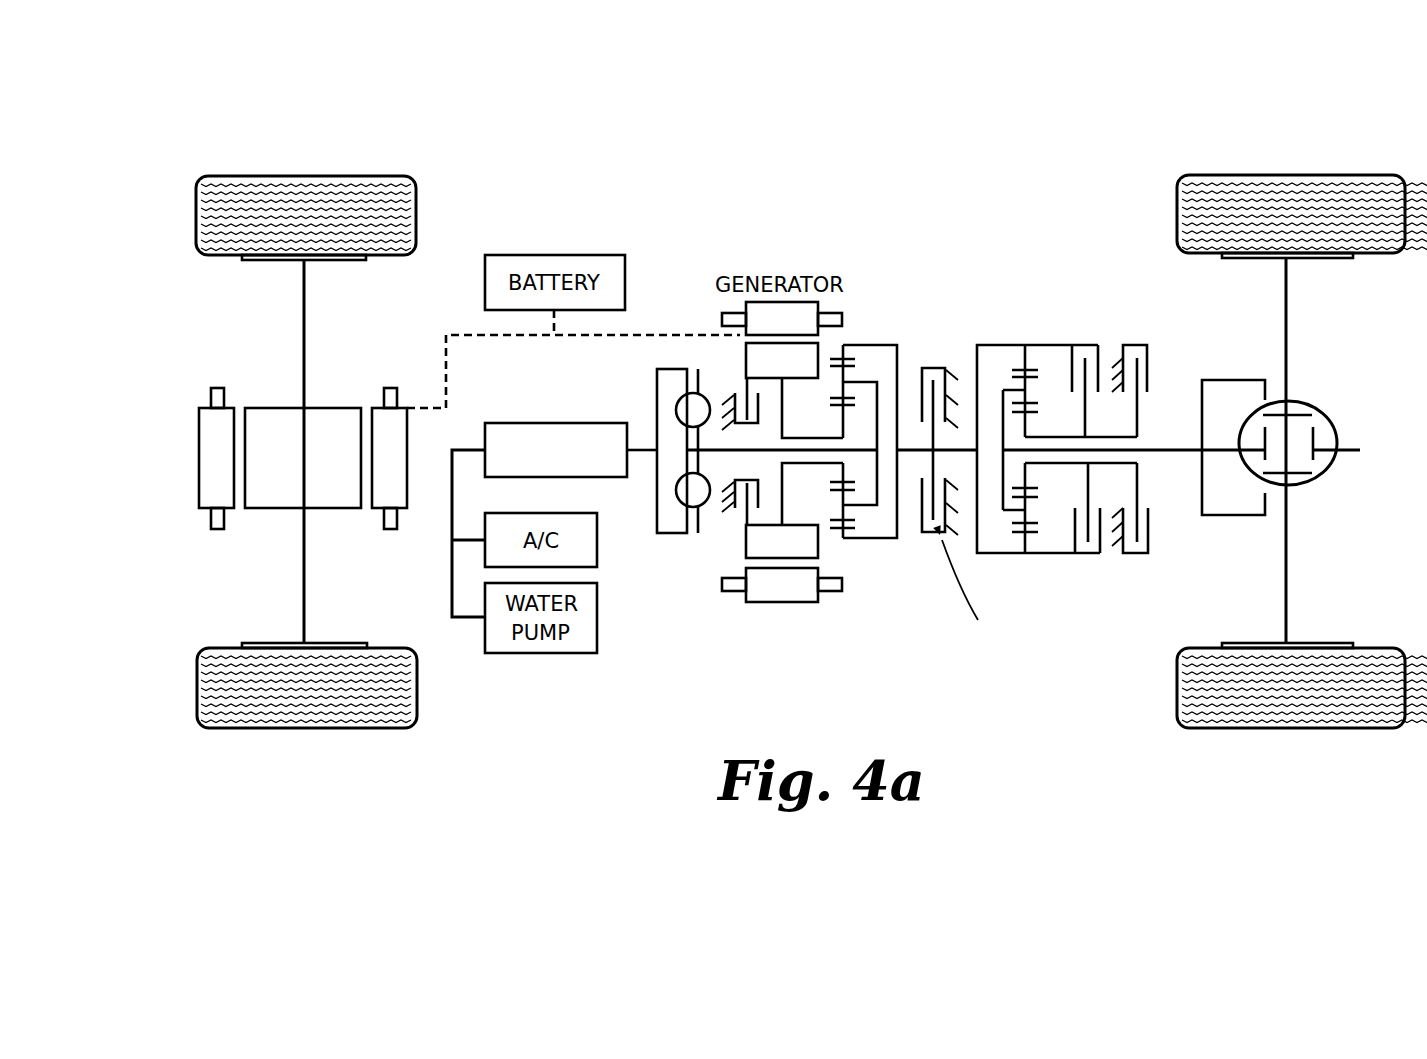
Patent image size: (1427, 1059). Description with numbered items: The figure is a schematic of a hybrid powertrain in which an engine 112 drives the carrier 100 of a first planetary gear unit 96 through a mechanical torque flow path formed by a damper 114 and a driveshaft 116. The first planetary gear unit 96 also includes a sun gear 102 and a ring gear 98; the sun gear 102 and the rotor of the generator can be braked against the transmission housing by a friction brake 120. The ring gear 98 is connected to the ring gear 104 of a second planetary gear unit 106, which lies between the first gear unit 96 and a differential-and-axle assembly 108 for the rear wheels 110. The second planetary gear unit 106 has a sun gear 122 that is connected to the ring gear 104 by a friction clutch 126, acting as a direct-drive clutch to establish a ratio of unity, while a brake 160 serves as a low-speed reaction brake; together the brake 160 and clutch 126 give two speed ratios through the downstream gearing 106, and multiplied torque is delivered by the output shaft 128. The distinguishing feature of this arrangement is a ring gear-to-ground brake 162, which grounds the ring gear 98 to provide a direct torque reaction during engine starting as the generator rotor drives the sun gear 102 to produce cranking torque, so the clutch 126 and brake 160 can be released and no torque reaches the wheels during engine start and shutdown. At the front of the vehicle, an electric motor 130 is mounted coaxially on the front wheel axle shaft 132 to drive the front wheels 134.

The rear wheels 110 is at (1330, 173).
The front wheels 134 is at (358, 728).
The front wheel axle shaft 132 is at (305, 350).
The electric motor 130 is at (338, 495).
The engine 112 is at (555, 423).
The damper 114 is at (690, 408).
The driveshaft 116 is at (720, 452).
The friction brake 120 is at (745, 505).
The sun gear 102 is at (810, 465).
The ring gear 98 is at (847, 540).
The carrier 100 is at (873, 540).
The first planetary gear unit 96 is at (870, 340).
The ring gear-to-ground brake 162 is at (930, 533).
The ring gear 104 is at (1020, 358).
The sun gear 122 is at (1030, 478).
The friction clutch 126 is at (1087, 365).
The brake 160 is at (1148, 380).
The second planetary gear unit 106 is at (1066, 560).
The output shaft 128 is at (1170, 453).
The differential-and-axle assembly 108 is at (1323, 413).